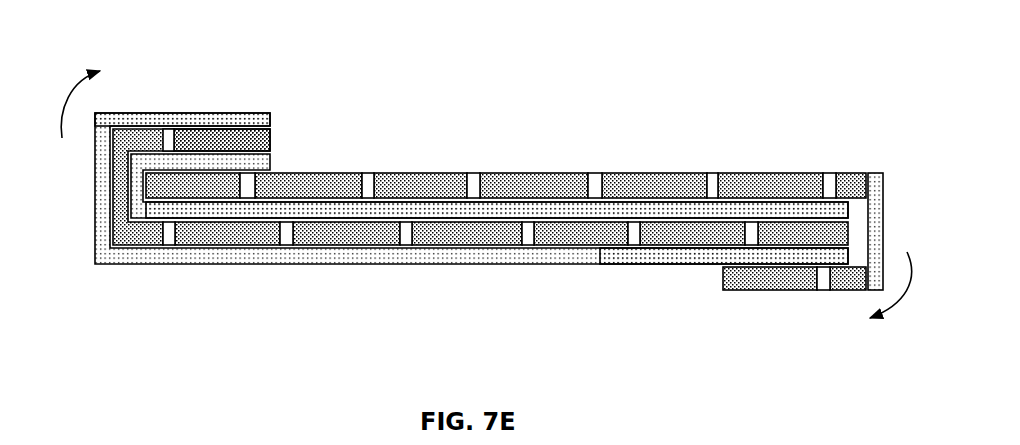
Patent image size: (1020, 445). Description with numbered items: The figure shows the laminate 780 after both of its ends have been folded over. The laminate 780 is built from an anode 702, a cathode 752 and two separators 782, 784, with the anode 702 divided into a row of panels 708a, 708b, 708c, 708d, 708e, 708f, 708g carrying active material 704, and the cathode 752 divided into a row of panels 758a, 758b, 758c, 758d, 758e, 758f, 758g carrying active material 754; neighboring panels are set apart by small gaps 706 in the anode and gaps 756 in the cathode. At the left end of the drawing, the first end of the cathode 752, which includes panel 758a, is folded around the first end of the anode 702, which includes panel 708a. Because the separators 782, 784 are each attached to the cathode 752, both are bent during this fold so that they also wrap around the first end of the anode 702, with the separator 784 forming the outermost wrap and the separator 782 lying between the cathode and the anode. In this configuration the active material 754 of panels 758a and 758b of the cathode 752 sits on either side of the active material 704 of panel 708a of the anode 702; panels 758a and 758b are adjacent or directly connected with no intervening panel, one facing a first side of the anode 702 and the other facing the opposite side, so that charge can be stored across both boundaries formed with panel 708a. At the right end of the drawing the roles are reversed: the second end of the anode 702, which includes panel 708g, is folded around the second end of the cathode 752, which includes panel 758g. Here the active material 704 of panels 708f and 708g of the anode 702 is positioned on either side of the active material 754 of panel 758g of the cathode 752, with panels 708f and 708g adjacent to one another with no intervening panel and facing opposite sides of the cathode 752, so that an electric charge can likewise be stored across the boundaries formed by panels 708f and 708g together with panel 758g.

The laminate 780 is at (69, 71).
The anode 702 is at (885, 228).
The active material 704 is at (877, 173).
The gap 706 is at (248, 185).
The panel 708a is at (157, 192).
The panel 708b is at (323, 184).
The panel 708c is at (422, 185).
The panel 708d is at (540, 185).
The panel 708e is at (662, 185).
The panel 708f is at (782, 185).
The panel 708g is at (732, 282).
The cathode 752 is at (830, 228).
The active material 754 is at (800, 232).
The gap 756 is at (168, 140).
The panel 758a is at (200, 140).
The panel 758b is at (232, 238).
The panel 758c is at (350, 238).
The panel 758d is at (470, 238).
The panel 758e is at (586, 238).
The panel 758f is at (675, 232).
The panel 758g is at (770, 232).
The separator 782 is at (240, 160).
The separator 784 is at (113, 113).